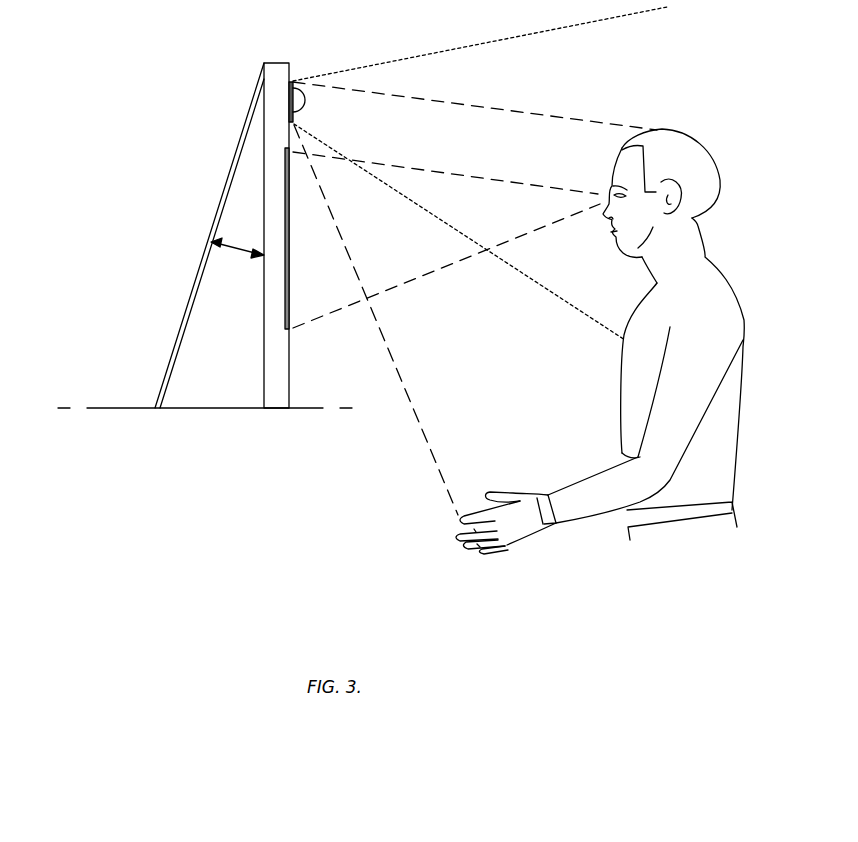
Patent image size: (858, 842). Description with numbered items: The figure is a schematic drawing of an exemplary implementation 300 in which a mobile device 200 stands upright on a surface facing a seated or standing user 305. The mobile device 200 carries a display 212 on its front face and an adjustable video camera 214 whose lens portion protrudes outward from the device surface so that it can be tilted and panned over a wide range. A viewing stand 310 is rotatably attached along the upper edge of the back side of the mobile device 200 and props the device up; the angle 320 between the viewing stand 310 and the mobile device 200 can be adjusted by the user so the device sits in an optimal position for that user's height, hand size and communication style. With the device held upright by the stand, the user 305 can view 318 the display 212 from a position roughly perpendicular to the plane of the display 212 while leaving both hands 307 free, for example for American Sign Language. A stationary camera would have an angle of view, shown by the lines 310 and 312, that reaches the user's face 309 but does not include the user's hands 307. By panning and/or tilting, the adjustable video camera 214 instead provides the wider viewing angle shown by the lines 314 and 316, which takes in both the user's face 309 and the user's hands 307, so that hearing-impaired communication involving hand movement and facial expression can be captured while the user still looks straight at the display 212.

The mobile device 200 is at (278, 62).
The display 212 is at (289, 280).
The adjustable video camera 214 is at (306, 100).
The implementation 300 is at (180, 560).
The user 305 is at (733, 292).
The user's hands 307 is at (532, 536).
The user's face 309 is at (614, 233).
The viewing stand 310 is at (188, 298).
The stationary camera angle-of-view line 312 is at (453, 228).
The adjustable camera angle-of-view line 314 is at (423, 95).
The adjustable camera angle-of-view line 316 is at (422, 420).
The view 318 is at (419, 166).
The angle 320 is at (230, 250).